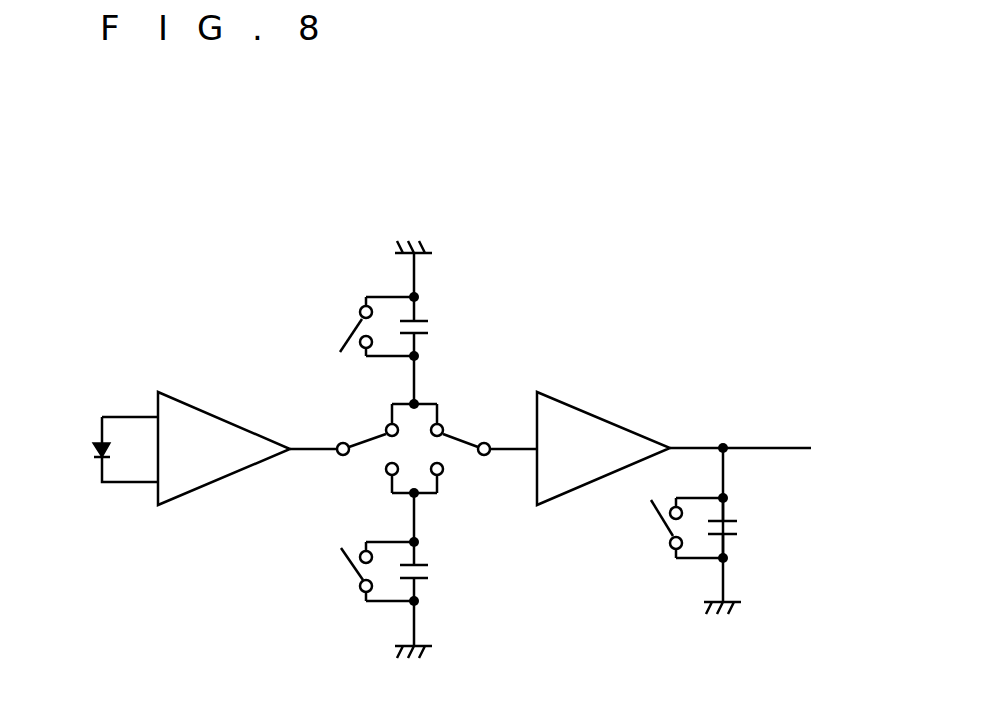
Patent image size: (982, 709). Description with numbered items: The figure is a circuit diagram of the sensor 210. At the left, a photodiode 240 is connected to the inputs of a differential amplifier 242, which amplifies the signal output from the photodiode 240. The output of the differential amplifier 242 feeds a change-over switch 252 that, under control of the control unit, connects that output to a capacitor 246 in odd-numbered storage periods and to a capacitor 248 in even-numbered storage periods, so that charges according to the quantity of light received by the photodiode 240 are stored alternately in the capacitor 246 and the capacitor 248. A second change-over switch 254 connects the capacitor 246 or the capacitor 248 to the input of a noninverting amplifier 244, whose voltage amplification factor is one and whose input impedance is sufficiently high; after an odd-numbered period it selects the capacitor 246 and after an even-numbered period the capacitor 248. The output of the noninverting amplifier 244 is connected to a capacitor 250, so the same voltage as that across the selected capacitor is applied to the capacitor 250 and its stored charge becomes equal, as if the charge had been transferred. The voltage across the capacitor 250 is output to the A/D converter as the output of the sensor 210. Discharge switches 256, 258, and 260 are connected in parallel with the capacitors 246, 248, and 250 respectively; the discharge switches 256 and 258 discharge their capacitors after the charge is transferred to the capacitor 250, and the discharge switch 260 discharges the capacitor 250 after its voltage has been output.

The sensor 210 is at (480, 258).
The photodiode 240 is at (100, 443).
The differential amplifier 242 is at (205, 402).
The noninverting amplifier 244 is at (583, 402).
The capacitor 246 is at (422, 320).
The capacitor 248 is at (422, 565).
The capacitor 250 is at (730, 521).
The change-over switch 252 is at (367, 438).
The change-over switch 254 is at (457, 438).
The discharge switch 256 is at (348, 340).
The discharge switch 258 is at (352, 562).
The discharge switch 260 is at (656, 518).